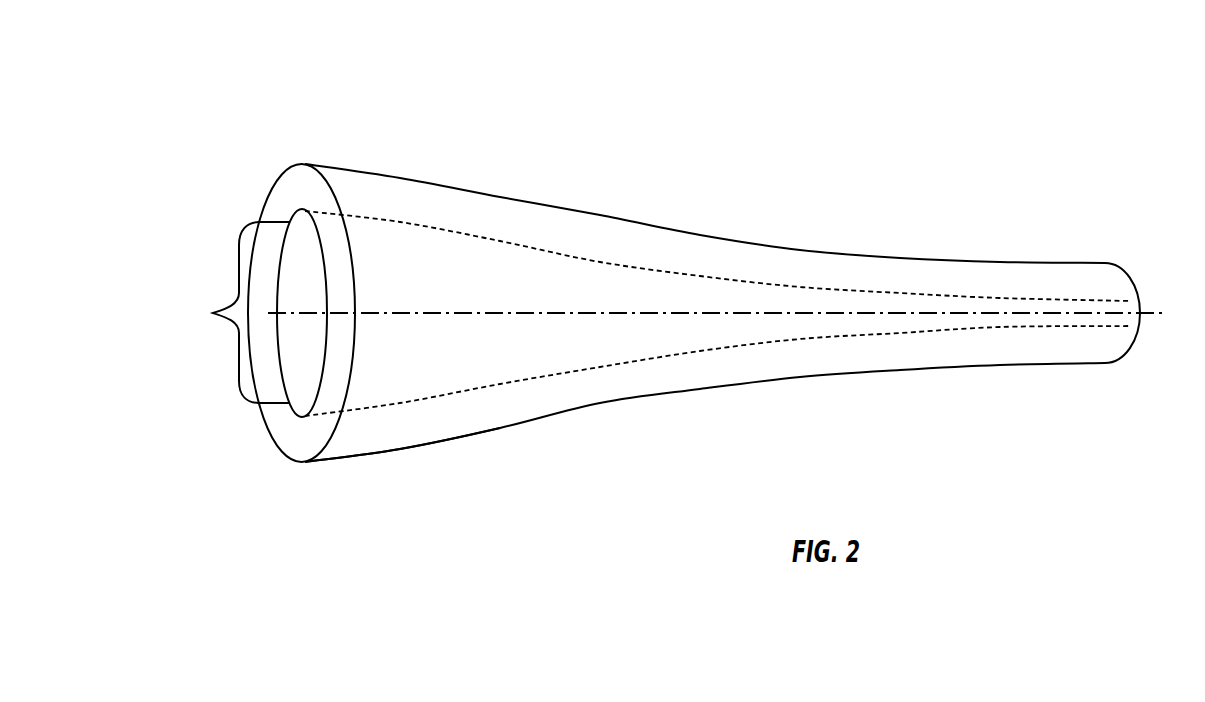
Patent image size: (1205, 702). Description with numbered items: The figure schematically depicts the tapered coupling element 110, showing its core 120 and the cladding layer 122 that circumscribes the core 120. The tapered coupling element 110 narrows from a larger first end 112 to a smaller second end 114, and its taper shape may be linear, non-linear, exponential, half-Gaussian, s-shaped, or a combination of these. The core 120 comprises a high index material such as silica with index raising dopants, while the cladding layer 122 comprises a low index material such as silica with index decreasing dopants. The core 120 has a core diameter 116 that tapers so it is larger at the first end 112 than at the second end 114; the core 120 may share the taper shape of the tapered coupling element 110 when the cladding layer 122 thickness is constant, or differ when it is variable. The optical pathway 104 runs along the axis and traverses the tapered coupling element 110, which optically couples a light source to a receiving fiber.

The optical pathway 104 is at (562, 315).
The tapered coupling element 110 is at (660, 137).
The first end 112 is at (272, 147).
The second end 114 is at (1107, 235).
The core diameter 116 is at (202, 312).
The core 120 is at (474, 350).
The cladding layer 122 is at (397, 429).